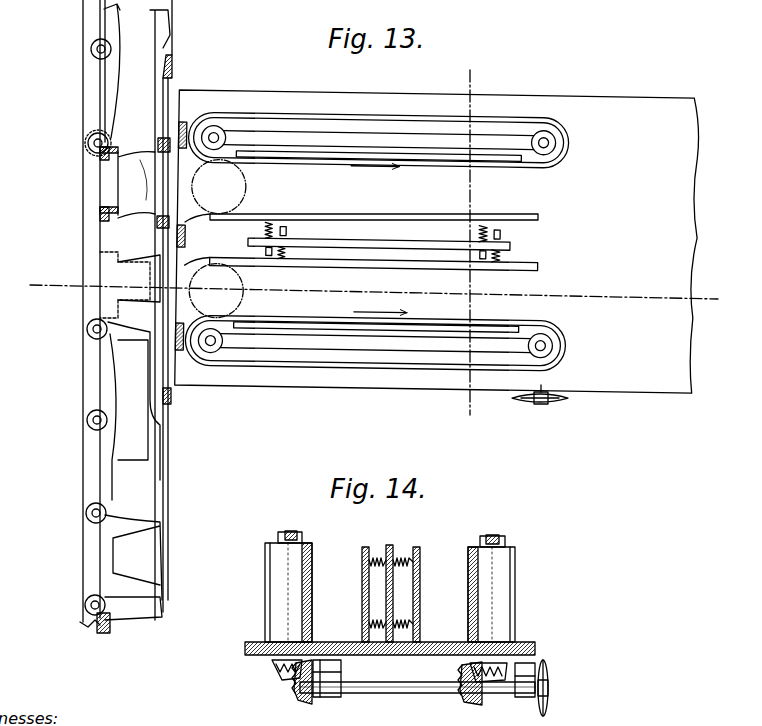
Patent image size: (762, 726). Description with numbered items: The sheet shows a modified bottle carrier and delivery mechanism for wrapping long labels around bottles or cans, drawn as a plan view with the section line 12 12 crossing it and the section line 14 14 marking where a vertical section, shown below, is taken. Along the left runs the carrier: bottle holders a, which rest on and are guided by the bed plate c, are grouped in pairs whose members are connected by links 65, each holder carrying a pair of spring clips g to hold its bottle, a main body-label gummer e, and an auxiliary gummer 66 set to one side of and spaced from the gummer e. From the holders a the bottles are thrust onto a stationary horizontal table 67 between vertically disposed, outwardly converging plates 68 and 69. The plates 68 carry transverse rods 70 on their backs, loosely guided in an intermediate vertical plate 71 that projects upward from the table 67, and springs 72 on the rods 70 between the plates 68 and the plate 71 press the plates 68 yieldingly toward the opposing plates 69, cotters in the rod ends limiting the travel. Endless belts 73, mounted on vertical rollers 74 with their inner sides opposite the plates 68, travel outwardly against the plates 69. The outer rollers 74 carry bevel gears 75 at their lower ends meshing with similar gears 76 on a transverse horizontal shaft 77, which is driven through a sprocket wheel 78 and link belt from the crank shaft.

In FIG. 13, the section line 12 12 is at (33, 288).
In FIG. 13, the section line 14 14 is at (469, 76).
In FIG. 13, the links 65 is at (85, 450).
In FIG. 13, the auxiliary gummers 66 is at (173, 73).
In FIG. 13, the table 67 is at (437, 241).
In FIG. 14, the table 67 is at (250, 642).
In FIG. 13, the plates or boards 68 is at (362, 214).
In FIG. 14, the plates or boards 68 is at (363, 552).
In FIG. 13, the plates or boards 69 is at (343, 158).
In FIG. 14, the plates or boards 69 is at (306, 566).
In FIG. 13, the transverse rods 70 is at (287, 229).
In FIG. 13, the intermediate vertical plate 71 is at (401, 240).
In FIG. 14, the intermediate vertical plate 71 is at (390, 546).
In FIG. 13, the springs 72 is at (262, 230).
In FIG. 14, the springs 72 is at (376, 618).
In FIG. 13, the endless belts 73 is at (452, 162).
In FIG. 14, the endless belts 73 is at (266, 580).
In FIG. 13, the rollers 74 is at (556, 133).
In FIG. 14, the rollers 74 is at (391, 592).
In FIG. 14, the bevel gears 75 is at (278, 668).
In FIG. 14, the bevel gear 76 is at (305, 705).
In FIG. 14, the transverse horizontal shaft 77 is at (362, 696).
In FIG. 13, the sprocket wheel 78 is at (548, 405).
In FIG. 14, the sprocket wheel 78 is at (550, 674).
In FIG. 13, the bottle holders a is at (122, 368).
In FIG. 13, the gummers e is at (170, 591).
In FIG. 13, the spring clips g is at (146, 300).
In FIG. 13, the bed plate c is at (133, 624).